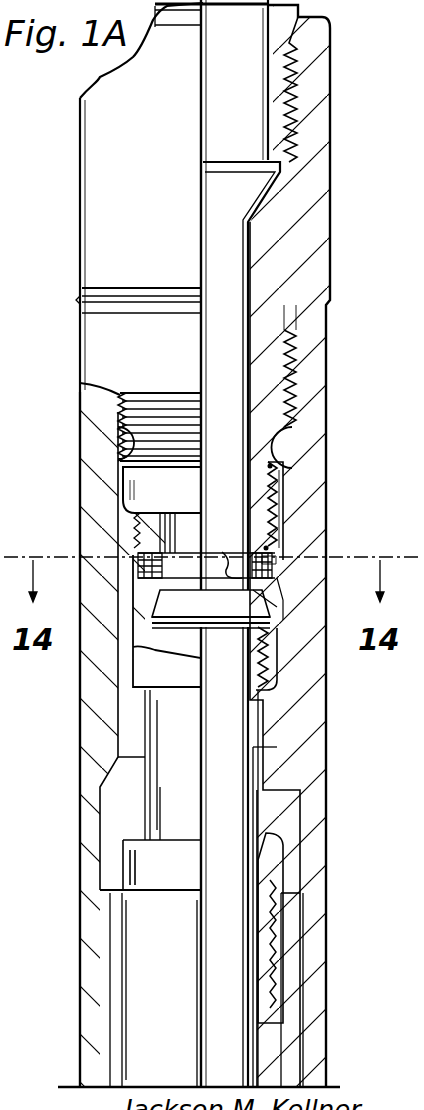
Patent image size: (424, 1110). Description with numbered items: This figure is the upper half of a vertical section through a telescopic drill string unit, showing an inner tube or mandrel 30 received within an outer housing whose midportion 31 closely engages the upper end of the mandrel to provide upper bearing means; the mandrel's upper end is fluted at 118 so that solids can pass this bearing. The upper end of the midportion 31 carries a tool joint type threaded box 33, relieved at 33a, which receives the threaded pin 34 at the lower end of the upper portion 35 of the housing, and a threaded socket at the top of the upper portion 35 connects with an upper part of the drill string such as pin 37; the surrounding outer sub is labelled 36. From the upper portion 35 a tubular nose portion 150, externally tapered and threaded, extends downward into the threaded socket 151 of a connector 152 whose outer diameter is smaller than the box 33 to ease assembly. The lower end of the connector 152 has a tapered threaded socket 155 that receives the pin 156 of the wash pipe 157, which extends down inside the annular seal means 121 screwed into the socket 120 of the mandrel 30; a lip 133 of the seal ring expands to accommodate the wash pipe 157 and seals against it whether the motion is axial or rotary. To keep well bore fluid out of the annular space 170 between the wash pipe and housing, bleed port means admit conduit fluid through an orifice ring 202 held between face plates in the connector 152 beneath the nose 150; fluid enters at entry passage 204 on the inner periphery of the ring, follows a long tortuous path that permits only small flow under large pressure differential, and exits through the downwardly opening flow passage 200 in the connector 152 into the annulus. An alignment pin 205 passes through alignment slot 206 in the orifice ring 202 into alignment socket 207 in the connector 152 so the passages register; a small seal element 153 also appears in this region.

The mandrel 30 is at (288, 1066).
The midportion 31 is at (313, 946).
The threaded box 33 is at (307, 415).
The relief 33a is at (297, 448).
The threaded pin 34 is at (268, 362).
The upper portion 35 is at (312, 252).
The top sub 36 is at (310, 97).
The pin 37 is at (282, 78).
The flutes 118 is at (301, 925).
The socket 120 is at (278, 1003).
The annular seal means 121 is at (284, 868).
The lip 133 is at (263, 836).
The nose portion 150 is at (258, 488).
The socket 151 is at (279, 508).
The connector 152 is at (132, 620).
The ring 153 is at (268, 548).
The socket 155 is at (274, 660).
The pin 156 is at (255, 676).
The wash pipe 157 is at (258, 748).
The annular space 170 is at (274, 737).
The flow passage 200 is at (282, 598).
The orifice ring 202 is at (274, 563).
The entry passage 204 is at (222, 551).
The alignment pin 205 is at (138, 578).
The alignment slot 206 is at (140, 582).
The alignment socket 207 is at (124, 600).